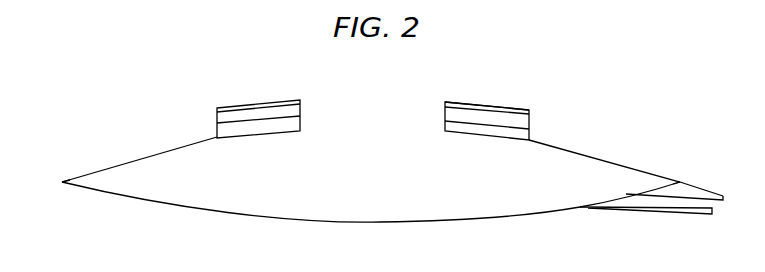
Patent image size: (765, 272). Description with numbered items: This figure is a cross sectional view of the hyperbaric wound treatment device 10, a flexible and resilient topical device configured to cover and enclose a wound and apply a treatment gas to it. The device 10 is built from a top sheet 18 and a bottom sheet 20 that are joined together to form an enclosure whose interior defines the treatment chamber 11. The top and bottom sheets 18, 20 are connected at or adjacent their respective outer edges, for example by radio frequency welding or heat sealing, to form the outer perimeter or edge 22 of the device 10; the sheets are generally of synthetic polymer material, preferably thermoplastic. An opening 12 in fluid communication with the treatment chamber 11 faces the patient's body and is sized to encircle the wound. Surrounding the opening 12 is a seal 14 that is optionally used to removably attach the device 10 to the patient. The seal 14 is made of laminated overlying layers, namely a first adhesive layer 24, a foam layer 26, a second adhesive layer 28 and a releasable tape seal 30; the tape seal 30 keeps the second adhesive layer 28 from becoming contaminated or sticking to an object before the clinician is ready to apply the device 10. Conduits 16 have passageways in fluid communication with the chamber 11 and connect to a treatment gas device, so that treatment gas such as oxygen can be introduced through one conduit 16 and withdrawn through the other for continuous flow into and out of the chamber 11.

The hyperbaric wound treatment device 10 is at (496, 53).
The treatment chamber 11 is at (379, 192).
The opening 12 is at (357, 103).
The seal 14 is at (241, 104).
The conduits 16 is at (723, 198).
The top sheet 18 is at (571, 152).
The bottom sheet 20 is at (538, 216).
The outer perimeter or edge 22 is at (62, 183).
The first adhesive layer 24 is at (493, 130).
The foam layer 26 is at (255, 122).
The second adhesive layer 28 is at (445, 108).
The releasable tape seal 30 is at (445, 103).